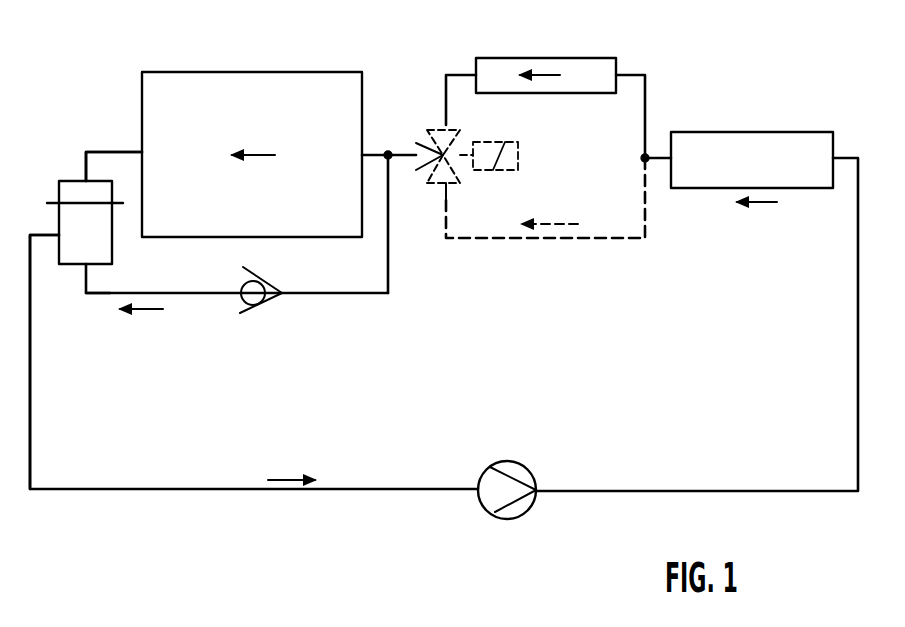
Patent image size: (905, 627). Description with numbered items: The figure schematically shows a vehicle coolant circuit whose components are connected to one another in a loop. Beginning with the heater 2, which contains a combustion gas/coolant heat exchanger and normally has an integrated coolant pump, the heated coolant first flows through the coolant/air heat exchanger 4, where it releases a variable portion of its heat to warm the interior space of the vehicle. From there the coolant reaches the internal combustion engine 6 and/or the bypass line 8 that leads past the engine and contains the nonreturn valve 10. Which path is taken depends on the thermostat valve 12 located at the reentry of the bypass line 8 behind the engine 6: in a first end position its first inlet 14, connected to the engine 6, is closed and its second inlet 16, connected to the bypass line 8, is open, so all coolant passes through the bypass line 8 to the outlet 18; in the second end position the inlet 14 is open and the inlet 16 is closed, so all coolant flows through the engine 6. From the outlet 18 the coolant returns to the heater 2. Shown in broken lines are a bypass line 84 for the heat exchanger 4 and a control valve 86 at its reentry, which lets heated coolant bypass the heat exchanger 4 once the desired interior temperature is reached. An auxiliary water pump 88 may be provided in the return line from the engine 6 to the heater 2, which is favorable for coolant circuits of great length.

The heater 2 is at (793, 152).
The coolant/air heat exchanger 4 is at (584, 72).
The internal combustion engine 6 is at (298, 85).
The bypass line 8 is at (192, 296).
The nonreturn valve 10 is at (280, 297).
The thermostat valve 12 is at (68, 227).
The first inlet 14 is at (84, 163).
The second inlet 16 is at (85, 288).
The outlet 18 is at (43, 237).
The bypass line 84 is at (572, 240).
The control valve 86 is at (442, 160).
The auxiliary water pump 88 is at (508, 502).